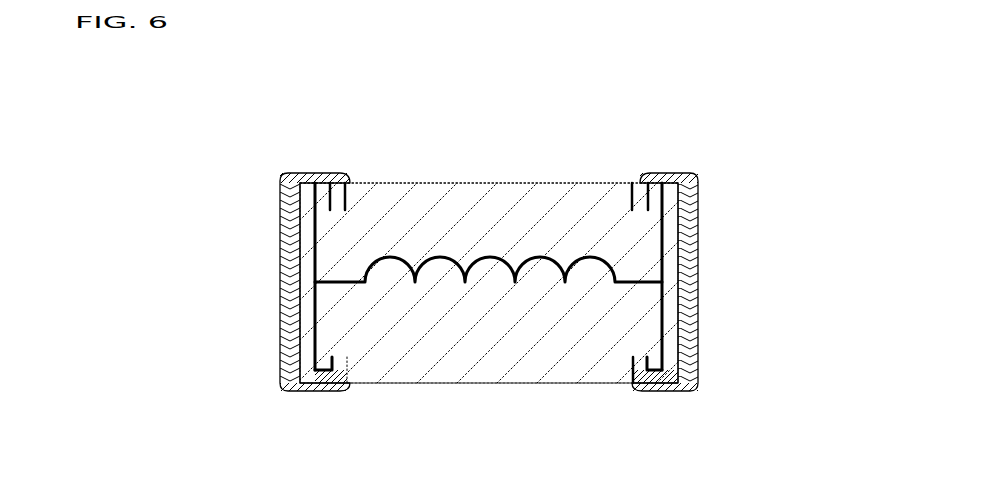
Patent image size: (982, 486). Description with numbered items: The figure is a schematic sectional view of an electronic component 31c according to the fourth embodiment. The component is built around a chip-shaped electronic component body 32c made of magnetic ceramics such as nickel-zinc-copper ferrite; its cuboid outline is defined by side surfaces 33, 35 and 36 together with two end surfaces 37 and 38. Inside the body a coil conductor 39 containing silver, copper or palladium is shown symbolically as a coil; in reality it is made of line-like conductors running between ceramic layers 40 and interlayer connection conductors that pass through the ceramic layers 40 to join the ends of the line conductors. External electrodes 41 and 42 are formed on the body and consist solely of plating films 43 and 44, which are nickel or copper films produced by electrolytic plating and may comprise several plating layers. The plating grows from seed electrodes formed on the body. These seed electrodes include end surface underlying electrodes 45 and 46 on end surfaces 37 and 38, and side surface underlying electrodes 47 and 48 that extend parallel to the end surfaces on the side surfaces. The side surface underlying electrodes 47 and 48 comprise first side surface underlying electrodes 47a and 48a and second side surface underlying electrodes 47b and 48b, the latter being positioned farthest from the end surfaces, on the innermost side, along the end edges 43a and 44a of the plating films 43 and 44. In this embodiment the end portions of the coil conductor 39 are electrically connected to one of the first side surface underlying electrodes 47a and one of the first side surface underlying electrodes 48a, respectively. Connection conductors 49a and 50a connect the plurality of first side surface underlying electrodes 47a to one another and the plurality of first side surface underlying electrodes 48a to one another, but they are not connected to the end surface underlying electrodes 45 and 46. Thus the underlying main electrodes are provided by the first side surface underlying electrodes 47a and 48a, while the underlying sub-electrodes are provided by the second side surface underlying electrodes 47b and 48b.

The electronic component 31c is at (430, 92).
The electronic component body 32c is at (491, 287).
The side surface 33 is at (468, 181).
The side surface 35 is at (475, 384).
The side surface 36 is at (403, 360).
The end surface 37 is at (290, 243).
The end surface 38 is at (688, 245).
The coil conductor 39 is at (489, 256).
The ceramic layers 40 is at (648, 184).
The external electrode 41 is at (276, 254).
The external electrode 42 is at (704, 253).
The plating film 43 is at (283, 212).
The end edge 43a is at (352, 181).
The plating film 44 is at (697, 212).
The end edge 44a is at (632, 185).
The end surface underlying electrode 45 is at (280, 184).
The end surface underlying electrode 46 is at (687, 186).
The side surface underlying electrodes 47 is at (261, 288).
The first side surface underlying electrodes 47a is at (329, 361).
The second side surface underlying electrode 47b is at (313, 347).
The side surface underlying electrodes 48 is at (729, 283).
The first side surface underlying electrodes 48a is at (648, 362).
The second side surface underlying electrode 48b is at (665, 347).
The connection conductor 49a is at (315, 388).
The connection conductor 50a is at (645, 388).